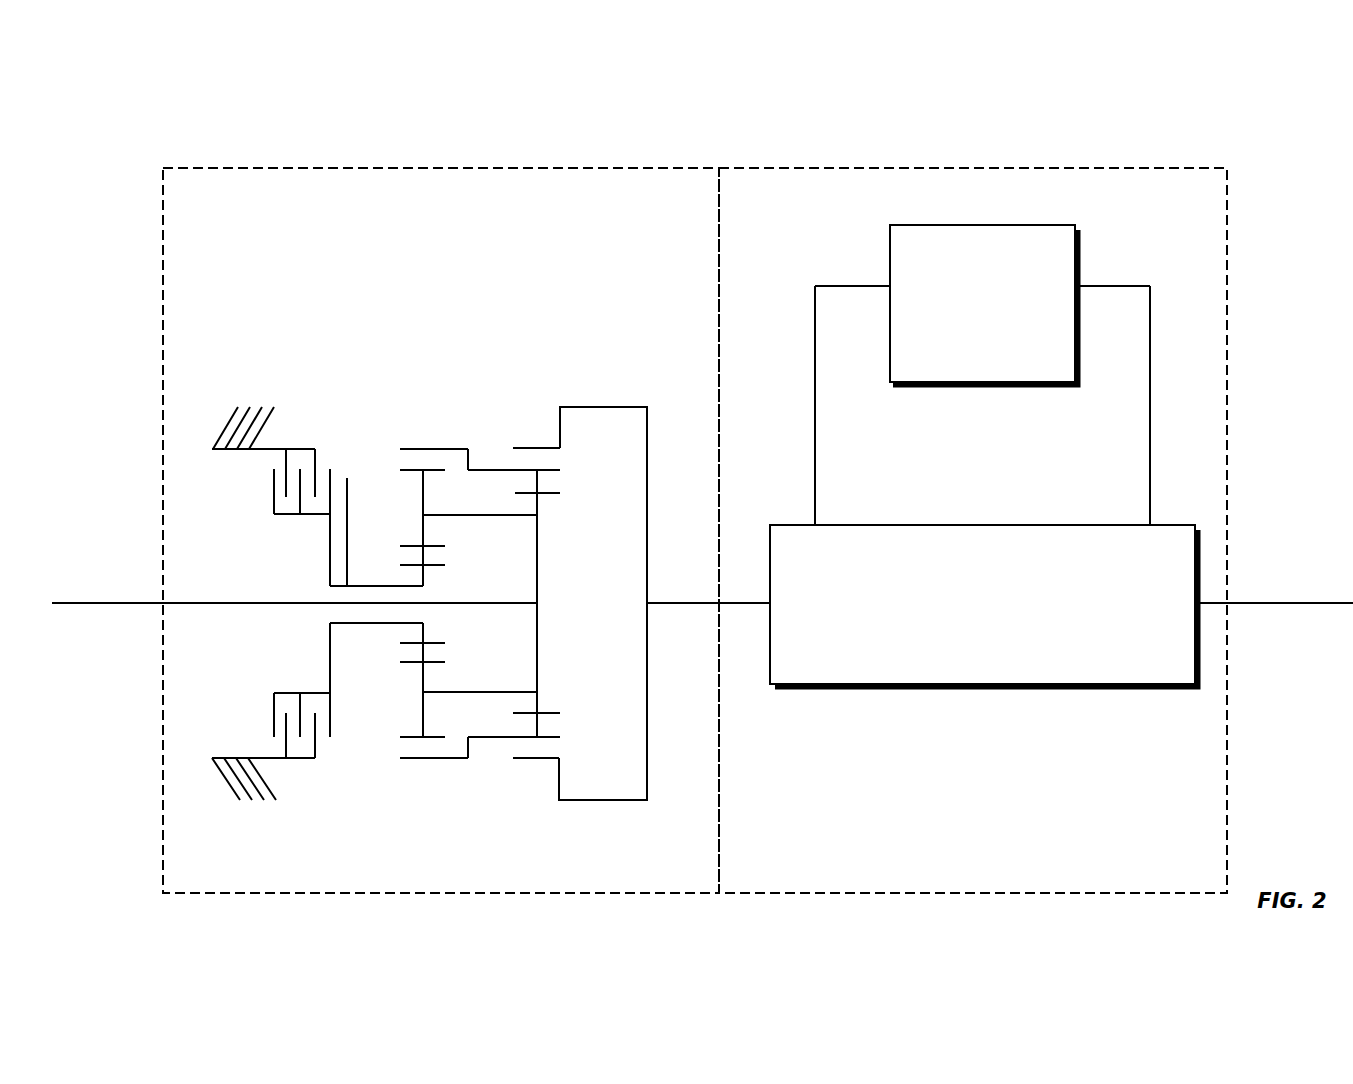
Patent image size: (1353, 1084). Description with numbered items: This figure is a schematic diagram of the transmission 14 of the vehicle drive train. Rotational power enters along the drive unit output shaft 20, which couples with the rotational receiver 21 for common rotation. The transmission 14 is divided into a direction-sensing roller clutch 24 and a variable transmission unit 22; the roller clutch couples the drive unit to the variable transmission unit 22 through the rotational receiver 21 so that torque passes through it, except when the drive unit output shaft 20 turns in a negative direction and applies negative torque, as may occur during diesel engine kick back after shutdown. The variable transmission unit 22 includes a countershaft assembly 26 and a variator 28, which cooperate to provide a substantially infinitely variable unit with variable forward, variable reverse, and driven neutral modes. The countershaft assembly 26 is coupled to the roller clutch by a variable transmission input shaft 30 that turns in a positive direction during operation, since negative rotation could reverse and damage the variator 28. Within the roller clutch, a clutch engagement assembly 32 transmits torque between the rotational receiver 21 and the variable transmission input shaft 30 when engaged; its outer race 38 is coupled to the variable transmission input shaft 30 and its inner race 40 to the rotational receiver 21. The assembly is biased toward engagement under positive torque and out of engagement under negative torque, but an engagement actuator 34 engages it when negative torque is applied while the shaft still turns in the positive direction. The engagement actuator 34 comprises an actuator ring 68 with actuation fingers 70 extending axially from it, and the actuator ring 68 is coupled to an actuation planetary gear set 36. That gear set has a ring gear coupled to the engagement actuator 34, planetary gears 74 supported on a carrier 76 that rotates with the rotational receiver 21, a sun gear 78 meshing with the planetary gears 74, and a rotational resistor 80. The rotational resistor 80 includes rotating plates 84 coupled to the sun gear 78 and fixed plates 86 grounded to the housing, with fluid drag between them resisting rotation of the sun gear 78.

The transmission 14 is at (695, 491).
The drive unit output shaft 20 is at (122, 603).
The rotational receiver 21 is at (186, 603).
The variable transmission unit 22 is at (993, 168).
The direction-sensing roller clutch 24 is at (483, 168).
The countershaft assembly 26 is at (990, 688).
The variator 28 is at (1055, 225).
The variable transmission input shaft 30 is at (742, 603).
The clutch engagement assembly 32 is at (538, 432).
The engagement actuator 34 is at (487, 460).
The actuation planetary gear set 36 is at (203, 310).
The outer race 38 is at (513, 448).
The inner race 40 is at (547, 497).
The actuator ring 68 is at (470, 460).
The actuation fingers 70 is at (503, 470).
The planetary gears 74 is at (470, 513).
The carrier 76 is at (422, 527).
The sun gear 78 is at (347, 480).
The rotational resistor 80 is at (298, 433).
The rotating plates 84 is at (332, 717).
The fixed plates 86 is at (306, 759).